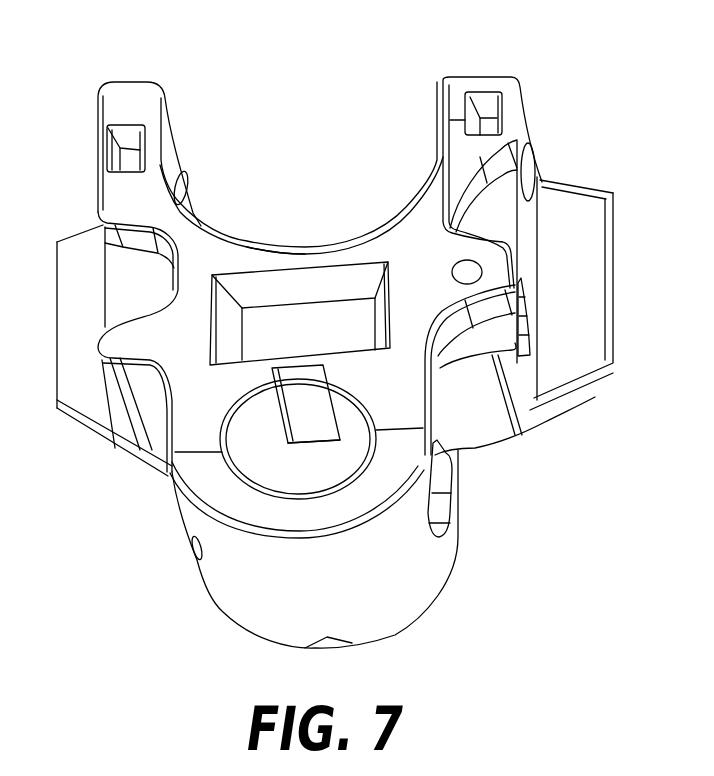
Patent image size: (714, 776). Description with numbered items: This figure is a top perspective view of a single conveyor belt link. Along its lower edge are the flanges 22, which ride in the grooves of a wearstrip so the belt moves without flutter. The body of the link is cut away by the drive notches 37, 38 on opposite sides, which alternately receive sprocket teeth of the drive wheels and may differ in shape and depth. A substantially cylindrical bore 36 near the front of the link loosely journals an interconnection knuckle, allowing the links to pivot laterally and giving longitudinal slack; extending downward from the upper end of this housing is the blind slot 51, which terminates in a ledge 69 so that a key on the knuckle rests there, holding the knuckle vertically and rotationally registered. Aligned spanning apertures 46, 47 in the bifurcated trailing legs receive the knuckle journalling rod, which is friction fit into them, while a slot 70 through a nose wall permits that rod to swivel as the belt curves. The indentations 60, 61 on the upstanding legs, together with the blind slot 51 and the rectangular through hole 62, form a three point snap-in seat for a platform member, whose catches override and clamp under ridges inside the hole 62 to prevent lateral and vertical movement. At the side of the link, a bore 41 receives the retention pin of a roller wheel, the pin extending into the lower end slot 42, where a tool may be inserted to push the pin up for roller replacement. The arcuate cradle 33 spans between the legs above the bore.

The flanges 22 is at (558, 341).
The arcuate cradle 33 is at (311, 250).
The cylindrical bore 36 is at (315, 490).
The drive notch 37 is at (142, 287).
The drive notch 38 is at (497, 208).
The bore 41 is at (472, 270).
The lower end slot 42 is at (537, 370).
The spanning aperture 46 is at (532, 165).
The spanning aperture 47 is at (183, 190).
The blind slot 51 is at (307, 407).
The indentation 60 is at (131, 140).
The indentation 61 is at (480, 107).
The rectangular through hole 62 is at (343, 287).
The ledge 69 is at (322, 441).
The slot 70 is at (435, 513).